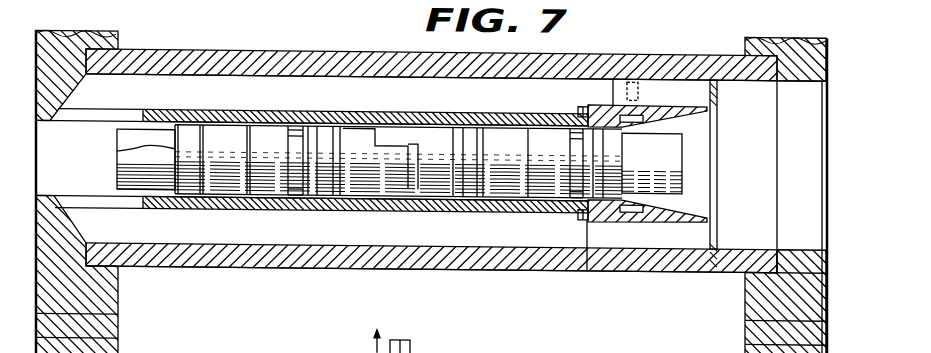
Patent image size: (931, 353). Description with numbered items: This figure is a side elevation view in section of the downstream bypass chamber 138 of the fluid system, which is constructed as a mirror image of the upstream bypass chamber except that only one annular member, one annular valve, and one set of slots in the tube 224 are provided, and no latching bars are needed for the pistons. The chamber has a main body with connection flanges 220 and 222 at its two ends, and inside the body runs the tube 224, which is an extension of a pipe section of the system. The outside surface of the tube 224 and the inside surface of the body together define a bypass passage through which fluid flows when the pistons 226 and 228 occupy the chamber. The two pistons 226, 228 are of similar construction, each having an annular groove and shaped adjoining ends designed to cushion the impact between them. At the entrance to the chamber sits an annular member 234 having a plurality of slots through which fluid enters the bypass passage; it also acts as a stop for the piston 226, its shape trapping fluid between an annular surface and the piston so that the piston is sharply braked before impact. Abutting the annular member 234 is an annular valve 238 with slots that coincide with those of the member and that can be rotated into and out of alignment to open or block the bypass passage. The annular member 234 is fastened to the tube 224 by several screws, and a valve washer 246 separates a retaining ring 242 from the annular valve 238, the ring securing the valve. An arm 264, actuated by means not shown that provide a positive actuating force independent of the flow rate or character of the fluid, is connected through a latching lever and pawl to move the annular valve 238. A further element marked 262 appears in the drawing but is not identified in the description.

The downstream bypass chamber 138 is at (293, 41).
The connection flange 220 is at (98, 304).
The connection flange 222 is at (745, 313).
The tube 224 is at (308, 205).
The piston 226 is at (138, 152).
The piston 228 is at (682, 138).
The annular member 234 is at (683, 203).
The annular valve 238 is at (589, 98).
The retaining ring 242 is at (577, 214).
The valve washer 246 is at (580, 216).
The upper sleeve 262 is at (147, 115).
The arm 264 is at (425, 347).